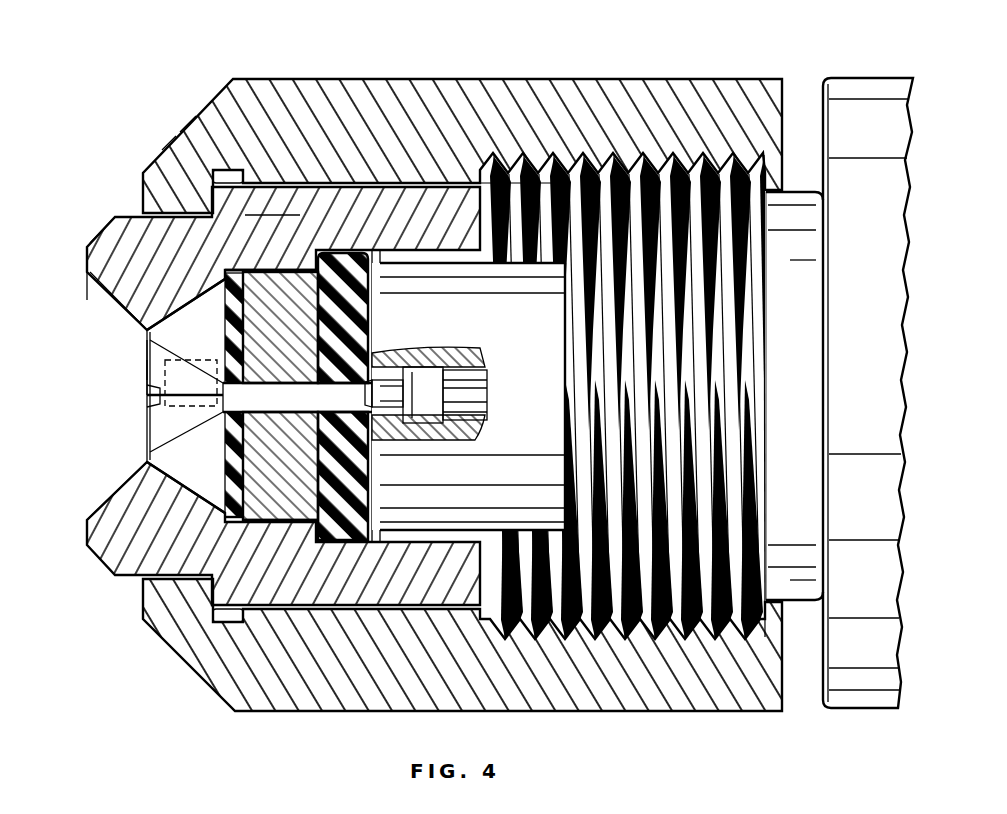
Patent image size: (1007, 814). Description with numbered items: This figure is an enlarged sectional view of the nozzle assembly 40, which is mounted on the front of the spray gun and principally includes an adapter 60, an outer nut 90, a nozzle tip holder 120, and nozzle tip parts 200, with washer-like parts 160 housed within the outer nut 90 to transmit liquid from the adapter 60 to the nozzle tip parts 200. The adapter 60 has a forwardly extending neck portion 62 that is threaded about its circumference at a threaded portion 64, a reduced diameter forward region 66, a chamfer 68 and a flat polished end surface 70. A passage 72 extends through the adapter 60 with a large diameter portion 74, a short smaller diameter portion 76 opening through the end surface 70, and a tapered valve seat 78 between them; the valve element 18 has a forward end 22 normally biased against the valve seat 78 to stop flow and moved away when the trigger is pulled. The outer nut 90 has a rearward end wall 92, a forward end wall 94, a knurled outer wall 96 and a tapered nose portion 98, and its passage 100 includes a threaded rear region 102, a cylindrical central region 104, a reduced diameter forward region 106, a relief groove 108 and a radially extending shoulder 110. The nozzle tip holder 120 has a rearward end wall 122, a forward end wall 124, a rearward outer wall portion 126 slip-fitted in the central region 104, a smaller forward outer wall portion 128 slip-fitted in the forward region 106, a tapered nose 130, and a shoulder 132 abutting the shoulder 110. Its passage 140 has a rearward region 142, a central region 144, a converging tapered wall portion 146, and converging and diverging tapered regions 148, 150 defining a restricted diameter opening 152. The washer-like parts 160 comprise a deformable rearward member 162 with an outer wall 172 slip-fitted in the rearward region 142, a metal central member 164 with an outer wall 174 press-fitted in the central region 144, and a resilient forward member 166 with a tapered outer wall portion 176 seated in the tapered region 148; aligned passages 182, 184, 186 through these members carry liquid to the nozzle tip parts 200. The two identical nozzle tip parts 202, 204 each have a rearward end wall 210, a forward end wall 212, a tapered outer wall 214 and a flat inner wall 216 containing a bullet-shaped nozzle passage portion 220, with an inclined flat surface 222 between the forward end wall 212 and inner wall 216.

The valve element 18 is at (477, 391).
The forward end of valve element 22 is at (413, 442).
The nozzle assembly 40 is at (273, 750).
The adapter 60 is at (858, 70).
The neck portion 62 is at (795, 200).
The threaded portion 64 is at (666, 155).
The reduced diameter forward region 66 is at (490, 240).
The chamfer 68 is at (432, 283).
The flat polished end surface 70 is at (336, 250).
The passage 72 is at (438, 372).
The large diameter portion 74 is at (480, 425).
The smaller diameter portion 76 is at (387, 380).
The tapered valve seat 78 is at (405, 375).
The outer nut 90 is at (274, 76).
The rearward end wall 92 is at (785, 95).
The forward end wall 94 is at (142, 180).
The knurled outer wall 96 is at (545, 78).
The tapered nose portion 98 is at (188, 125).
The passage 100 is at (420, 598).
The threaded rear region 102 is at (515, 625).
The central region 104 is at (343, 598).
The forward region 106 is at (150, 572).
The relief groove 108 is at (222, 610).
The shoulder 110 is at (210, 598).
The nozzle tip holder 120 is at (127, 207).
The rearward end wall 122 is at (500, 165).
The forward end wall 124 is at (87, 262).
The rearward outer wall portion 126 is at (245, 180).
The forward outer wall portion 128 is at (225, 615).
The tapered nose 130 is at (98, 238).
The shoulder 132 is at (168, 143).
The passage 140 is at (427, 538).
The rearward region 142 is at (463, 533).
The central region 144 is at (258, 252).
The converging tapered wall portion 146 is at (300, 228).
The converging tapered region 148 is at (143, 343).
The diverging tapered region 150 is at (143, 333).
The restricted diameter opening 152 is at (146, 363).
The washer-like parts 160 is at (262, 530).
The rearward member 162 is at (378, 600).
The central member 164 is at (288, 456).
The forward member 166 is at (228, 520).
The outer wall 172 is at (315, 615).
The outer wall 174 is at (230, 490).
The tapered outer wall portion 176 is at (233, 276).
The passage 182 is at (377, 396).
The passage 184 is at (303, 398).
The passage 186 is at (223, 412).
The nozzle tip parts 200 is at (144, 440).
The nozzle tip part 202 is at (208, 342).
The nozzle tip part 204 is at (208, 473).
The rearward end wall 210 is at (190, 302).
The forward end wall 212 is at (146, 373).
The tapered outer wall 214 is at (140, 470).
The inner wall 216 is at (146, 392).
The nozzle passage portion 220 is at (218, 362).
The inclined flat surface 222 is at (152, 390).